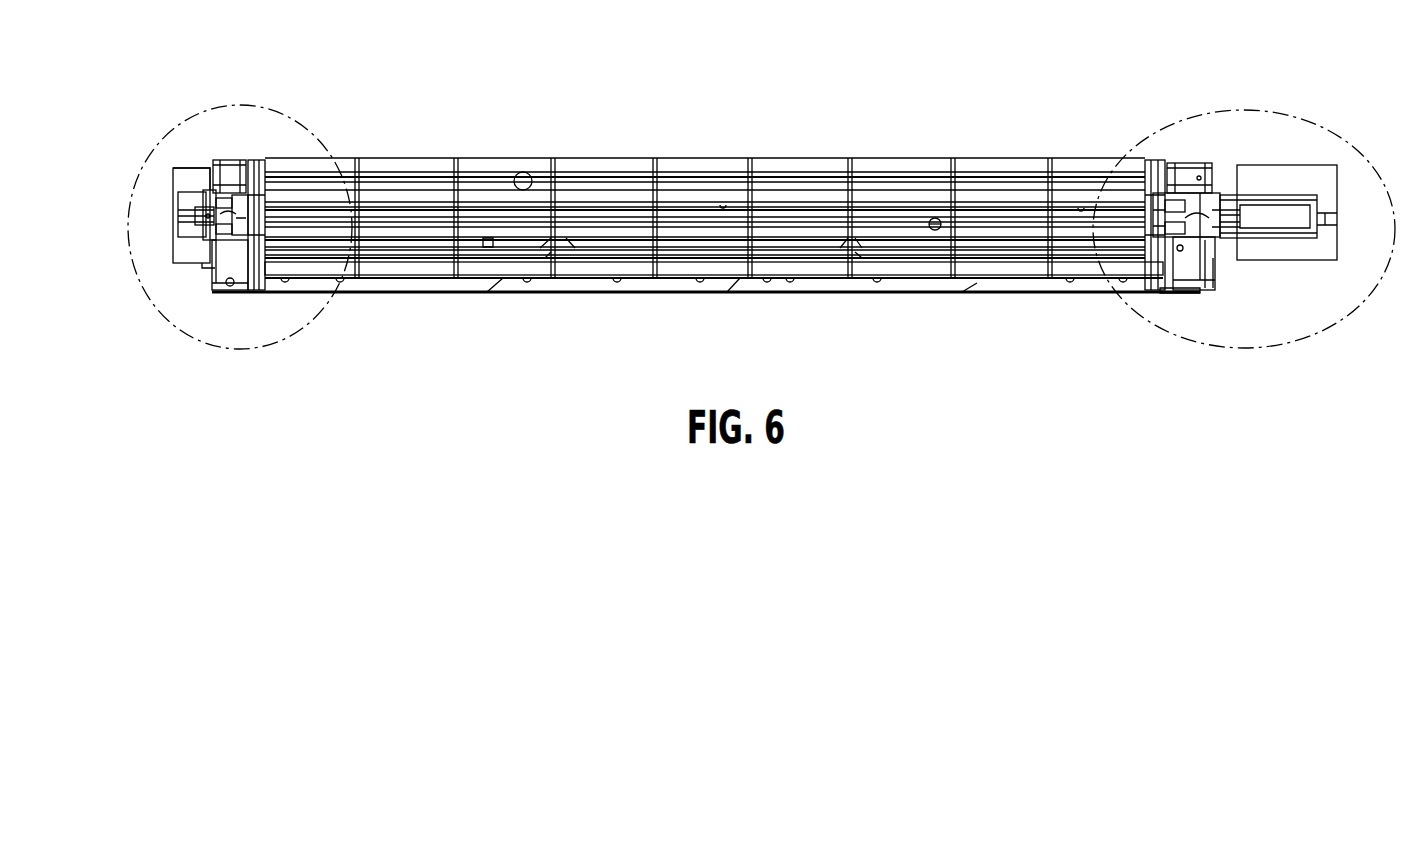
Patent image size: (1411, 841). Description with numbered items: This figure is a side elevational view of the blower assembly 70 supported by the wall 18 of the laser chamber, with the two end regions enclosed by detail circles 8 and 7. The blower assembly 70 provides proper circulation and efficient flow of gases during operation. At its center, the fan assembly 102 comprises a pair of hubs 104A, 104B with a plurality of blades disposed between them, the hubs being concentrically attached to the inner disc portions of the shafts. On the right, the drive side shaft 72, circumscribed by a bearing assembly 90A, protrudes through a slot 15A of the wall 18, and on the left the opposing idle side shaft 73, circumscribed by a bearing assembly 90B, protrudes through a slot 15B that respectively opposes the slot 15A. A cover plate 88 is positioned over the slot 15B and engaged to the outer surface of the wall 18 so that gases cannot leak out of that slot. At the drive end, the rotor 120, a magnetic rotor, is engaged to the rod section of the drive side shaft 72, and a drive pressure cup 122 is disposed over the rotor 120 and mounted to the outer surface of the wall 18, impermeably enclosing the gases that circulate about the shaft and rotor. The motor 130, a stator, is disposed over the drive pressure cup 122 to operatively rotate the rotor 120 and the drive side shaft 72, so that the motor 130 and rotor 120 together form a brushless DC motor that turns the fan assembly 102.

The detail view circle right end 7 is at (1156, 330).
The detail view circle left end 8 is at (178, 122).
The slot 15A is at (1187, 185).
The slot 15B is at (225, 195).
The wall 18 is at (213, 278).
The blower assembly 70 is at (433, 140).
The drive side shaft 72 is at (1180, 230).
The idle side shaft 73 is at (233, 208).
The cover plate 88 is at (185, 187).
The bearing assembly 90A is at (1160, 188).
The bearing assembly 90B is at (222, 195).
The fan assembly 102 is at (830, 182).
The hub 104A is at (1150, 240).
The hub 104B is at (262, 252).
The rotor 120 is at (1277, 252).
The drive pressure cup 122 is at (1290, 193).
The motor 130 is at (1270, 252).